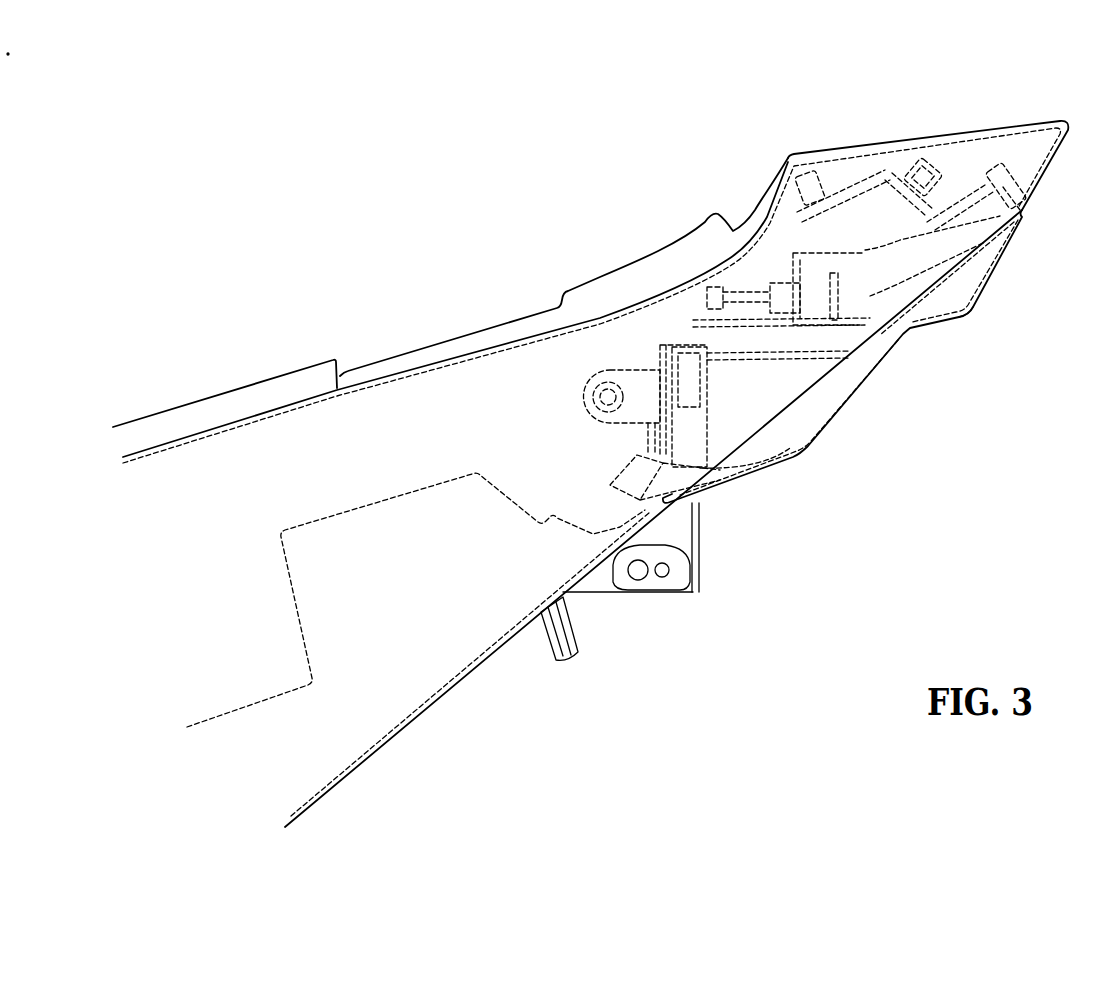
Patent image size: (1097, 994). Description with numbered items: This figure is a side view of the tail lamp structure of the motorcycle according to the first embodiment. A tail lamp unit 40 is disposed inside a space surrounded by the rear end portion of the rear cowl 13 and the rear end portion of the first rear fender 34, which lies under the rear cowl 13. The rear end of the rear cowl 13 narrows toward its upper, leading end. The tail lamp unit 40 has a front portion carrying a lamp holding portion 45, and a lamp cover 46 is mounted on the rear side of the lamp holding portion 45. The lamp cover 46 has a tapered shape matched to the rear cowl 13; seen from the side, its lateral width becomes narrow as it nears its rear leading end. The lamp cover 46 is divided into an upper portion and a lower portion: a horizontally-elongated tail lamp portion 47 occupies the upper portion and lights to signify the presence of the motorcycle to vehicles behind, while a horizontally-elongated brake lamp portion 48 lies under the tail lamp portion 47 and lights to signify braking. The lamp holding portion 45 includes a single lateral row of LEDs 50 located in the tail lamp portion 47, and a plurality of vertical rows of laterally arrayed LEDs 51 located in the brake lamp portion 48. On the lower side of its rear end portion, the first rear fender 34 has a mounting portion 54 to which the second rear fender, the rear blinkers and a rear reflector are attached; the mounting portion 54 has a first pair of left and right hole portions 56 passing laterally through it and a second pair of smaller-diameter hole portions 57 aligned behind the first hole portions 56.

The rear cowl 13 is at (830, 151).
The first rear fender 34 is at (592, 595).
The tail lamp unit 40 is at (917, 343).
The lamp holding portion 45 is at (698, 324).
The lamp cover 46 is at (964, 278).
The tail lamp portion 47 is at (975, 306).
The brake lamp portion 48 is at (823, 407).
The LEDs 50 is at (1027, 228).
The LEDs 51 is at (725, 377).
The mounting portion 54 is at (682, 528).
The first hole portions 56 is at (642, 580).
The second hole portions 57 is at (667, 578).